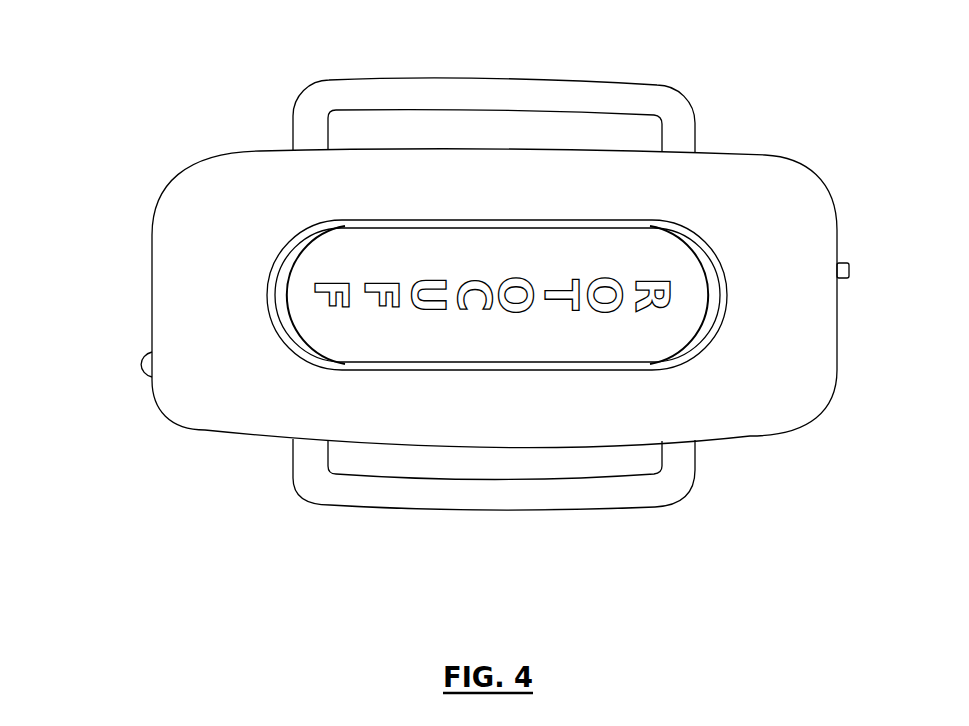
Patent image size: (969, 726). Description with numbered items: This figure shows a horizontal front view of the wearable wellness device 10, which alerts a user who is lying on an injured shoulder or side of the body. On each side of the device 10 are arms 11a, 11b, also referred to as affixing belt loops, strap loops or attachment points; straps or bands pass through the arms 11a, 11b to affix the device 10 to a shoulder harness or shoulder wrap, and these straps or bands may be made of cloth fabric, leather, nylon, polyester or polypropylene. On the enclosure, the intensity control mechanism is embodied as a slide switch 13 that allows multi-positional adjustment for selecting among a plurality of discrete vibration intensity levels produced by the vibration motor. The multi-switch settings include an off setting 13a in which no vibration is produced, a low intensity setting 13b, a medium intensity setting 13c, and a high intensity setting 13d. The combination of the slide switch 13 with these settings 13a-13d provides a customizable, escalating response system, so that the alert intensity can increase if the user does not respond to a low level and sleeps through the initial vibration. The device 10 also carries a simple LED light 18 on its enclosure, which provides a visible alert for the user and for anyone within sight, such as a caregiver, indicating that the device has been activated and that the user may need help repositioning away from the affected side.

The wearable wellness device 10 is at (224, 134).
The arm 11a is at (548, 508).
The arm 11b is at (507, 83).
The slide switch 13 is at (851, 270).
The off setting 13a is at (810, 330).
The low intensity setting 13b is at (818, 305).
The medium intensity setting 13c is at (818, 287).
The high intensity setting 13d is at (808, 265).
The LED light 18 is at (143, 352).